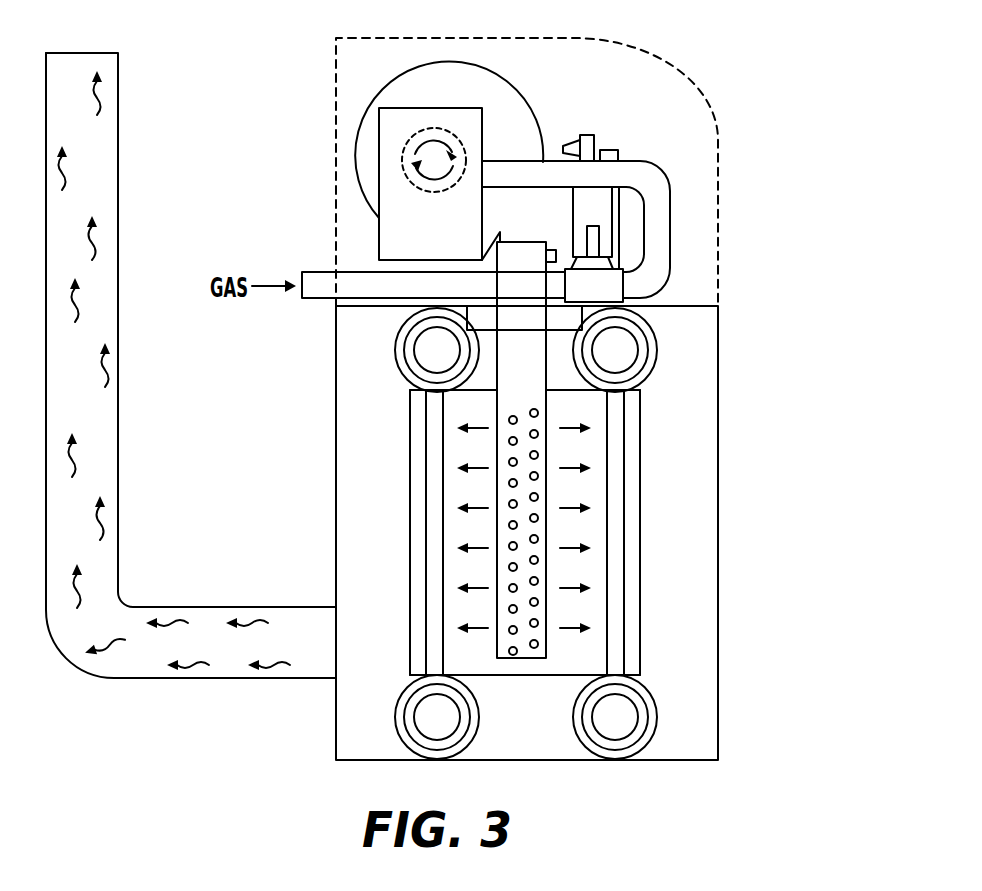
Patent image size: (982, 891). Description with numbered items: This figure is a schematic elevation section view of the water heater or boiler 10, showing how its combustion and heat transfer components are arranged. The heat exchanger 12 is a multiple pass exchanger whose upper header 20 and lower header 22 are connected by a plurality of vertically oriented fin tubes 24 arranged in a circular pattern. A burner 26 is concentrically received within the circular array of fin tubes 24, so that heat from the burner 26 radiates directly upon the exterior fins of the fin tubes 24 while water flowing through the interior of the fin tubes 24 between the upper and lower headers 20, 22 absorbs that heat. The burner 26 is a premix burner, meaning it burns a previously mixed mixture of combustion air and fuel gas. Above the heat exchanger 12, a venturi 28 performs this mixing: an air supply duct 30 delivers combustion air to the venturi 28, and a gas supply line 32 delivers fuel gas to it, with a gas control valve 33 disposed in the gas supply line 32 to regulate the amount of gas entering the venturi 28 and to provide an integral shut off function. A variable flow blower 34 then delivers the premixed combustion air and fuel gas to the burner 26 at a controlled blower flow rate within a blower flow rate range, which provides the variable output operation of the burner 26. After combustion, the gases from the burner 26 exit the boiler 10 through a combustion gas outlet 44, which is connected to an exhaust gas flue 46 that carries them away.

The boiler 10 is at (810, 221).
The heat exchanger 12 is at (614, 528).
The upper header 20 is at (655, 340).
The lower header 22 is at (655, 713).
The fin tubes 24 is at (640, 553).
The burner 26 is at (540, 423).
The venturi 28 is at (387, 107).
The air supply duct 30 is at (342, 157).
The gas supply line 32 is at (652, 185).
The gas control valve 33 is at (617, 150).
The variable flow blower 34 is at (520, 92).
The combustion gas outlet 44 is at (334, 636).
The exhaust gas flue 46 is at (105, 152).